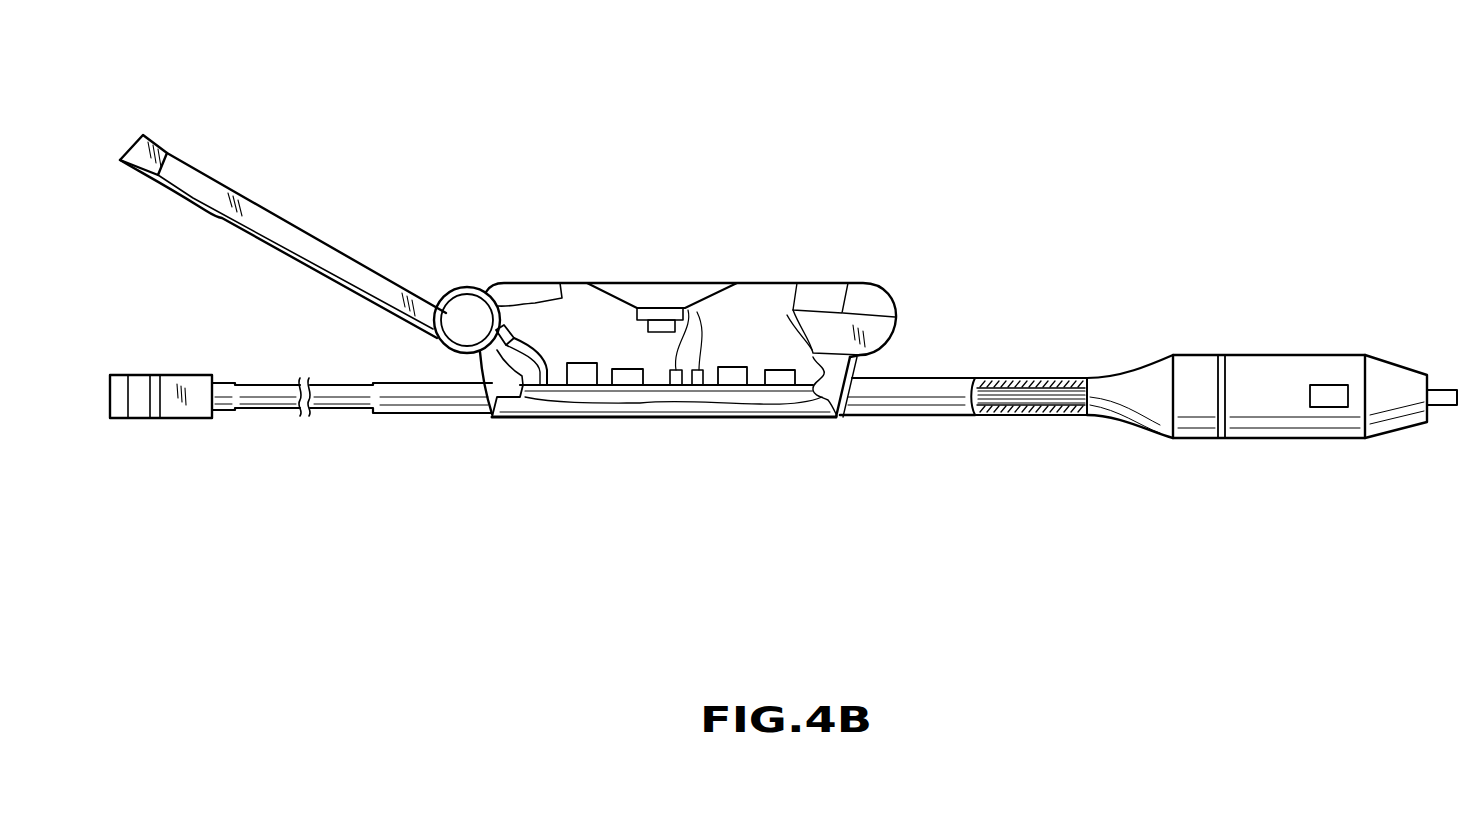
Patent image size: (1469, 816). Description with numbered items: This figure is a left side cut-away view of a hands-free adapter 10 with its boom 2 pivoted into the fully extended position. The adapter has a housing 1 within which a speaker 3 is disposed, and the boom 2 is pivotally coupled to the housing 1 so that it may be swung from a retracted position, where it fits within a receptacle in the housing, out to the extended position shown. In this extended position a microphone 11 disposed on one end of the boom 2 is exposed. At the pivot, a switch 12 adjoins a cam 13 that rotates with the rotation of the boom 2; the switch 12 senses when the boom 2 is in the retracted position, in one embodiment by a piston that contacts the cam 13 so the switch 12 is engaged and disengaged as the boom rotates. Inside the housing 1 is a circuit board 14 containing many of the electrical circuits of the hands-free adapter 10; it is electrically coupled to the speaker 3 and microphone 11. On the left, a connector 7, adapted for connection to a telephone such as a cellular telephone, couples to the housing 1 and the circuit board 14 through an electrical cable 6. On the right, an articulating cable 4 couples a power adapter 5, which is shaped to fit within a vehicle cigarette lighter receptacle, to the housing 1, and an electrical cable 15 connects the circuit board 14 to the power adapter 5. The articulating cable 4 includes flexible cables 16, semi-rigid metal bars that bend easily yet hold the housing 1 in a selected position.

The housing 1 is at (587, 409).
The boom 2 is at (317, 241).
The speaker 3 is at (632, 287).
The articulating cable 4 is at (932, 377).
The power adapter 5 is at (1308, 355).
The electrical cable 6 is at (283, 415).
The connector 7 is at (164, 371).
The hands-free adapter 10 is at (842, 84).
The microphone 11 is at (160, 138).
The switch 12 is at (512, 338).
The cam 13 is at (458, 302).
The circuit board 14 is at (678, 389).
The electrical cable 15 is at (1020, 388).
The flexible cables 16 is at (1065, 380).